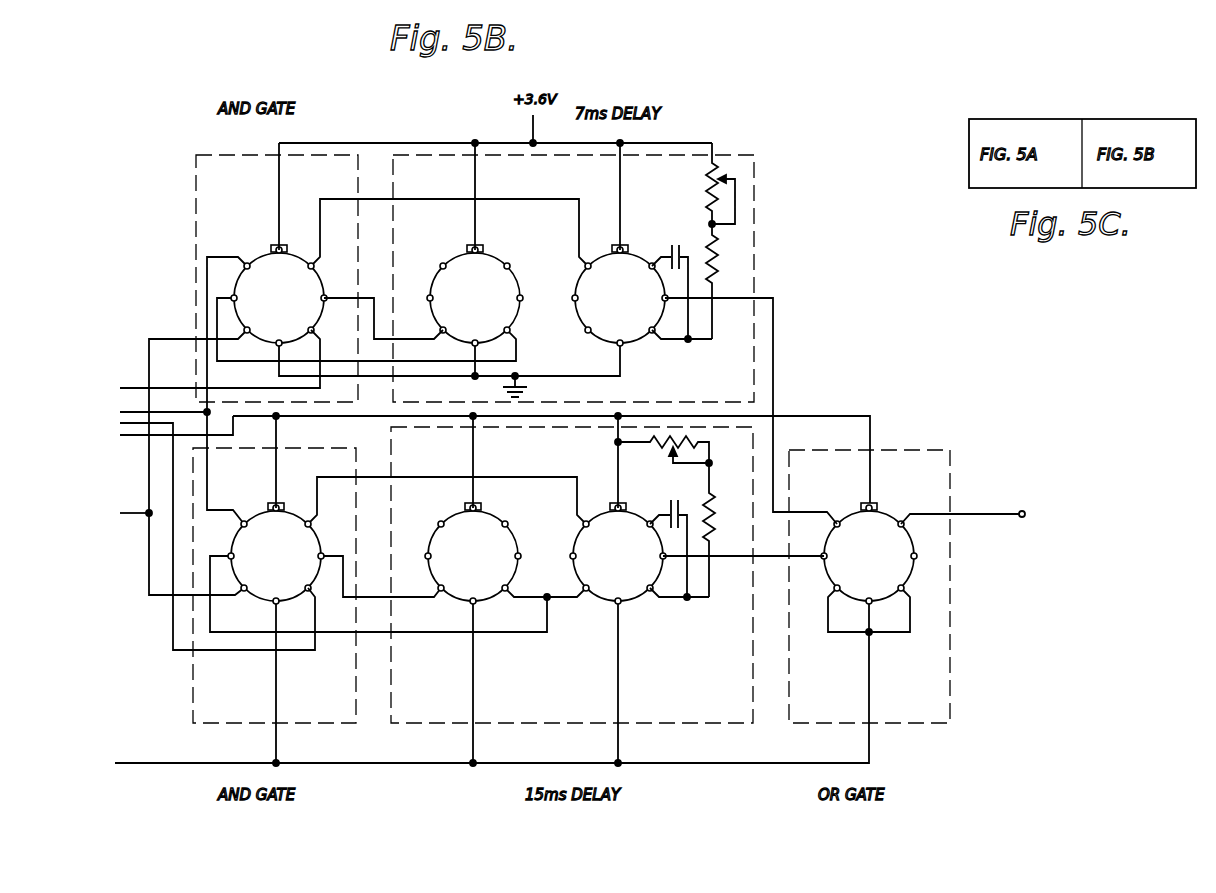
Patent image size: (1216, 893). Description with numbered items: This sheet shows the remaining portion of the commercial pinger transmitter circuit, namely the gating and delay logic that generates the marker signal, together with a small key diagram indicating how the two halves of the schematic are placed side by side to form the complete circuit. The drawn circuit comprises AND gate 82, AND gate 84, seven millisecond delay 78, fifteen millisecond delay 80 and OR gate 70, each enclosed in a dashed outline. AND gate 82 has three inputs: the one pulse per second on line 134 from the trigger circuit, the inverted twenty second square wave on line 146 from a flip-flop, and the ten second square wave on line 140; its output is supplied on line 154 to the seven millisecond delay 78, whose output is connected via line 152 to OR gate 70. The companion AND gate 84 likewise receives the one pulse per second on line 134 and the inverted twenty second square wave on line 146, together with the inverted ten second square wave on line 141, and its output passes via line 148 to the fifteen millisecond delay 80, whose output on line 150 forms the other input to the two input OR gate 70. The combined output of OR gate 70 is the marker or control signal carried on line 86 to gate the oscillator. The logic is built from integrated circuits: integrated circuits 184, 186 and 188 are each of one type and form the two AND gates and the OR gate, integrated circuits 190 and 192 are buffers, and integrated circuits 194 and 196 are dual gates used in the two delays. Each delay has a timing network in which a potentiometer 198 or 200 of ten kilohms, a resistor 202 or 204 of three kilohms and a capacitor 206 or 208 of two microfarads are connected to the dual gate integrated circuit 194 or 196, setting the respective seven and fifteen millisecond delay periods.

The OR gate 70 is at (953, 455).
The seven millisecond delay 78 is at (755, 223).
The fifteen millisecond delay 80 is at (663, 723).
The AND gate 82 is at (196, 232).
The AND gate 84 is at (193, 710).
The line 86 is at (965, 511).
The line 134 is at (126, 411).
The line 140 is at (123, 387).
The line 141 is at (128, 424).
The line 146 is at (128, 514).
The line 148 is at (403, 597).
The line 150 is at (776, 560).
The line 152 is at (774, 357).
The line 154 is at (373, 296).
The integrated circuit 184 is at (258, 258).
The integrated circuit 186 is at (258, 515).
The integrated circuit 188 is at (908, 578).
The integrated circuit 190 is at (507, 275).
The integrated circuit 192 is at (512, 537).
The integrated circuit 194 is at (635, 341).
The integrated circuit 196 is at (632, 598).
The potentiometer 198 is at (728, 178).
The potentiometer 200 is at (690, 433).
The resistor 202 is at (717, 252).
The resistor 204 is at (712, 520).
The capacitor 206 is at (670, 248).
The capacitor 208 is at (667, 512).